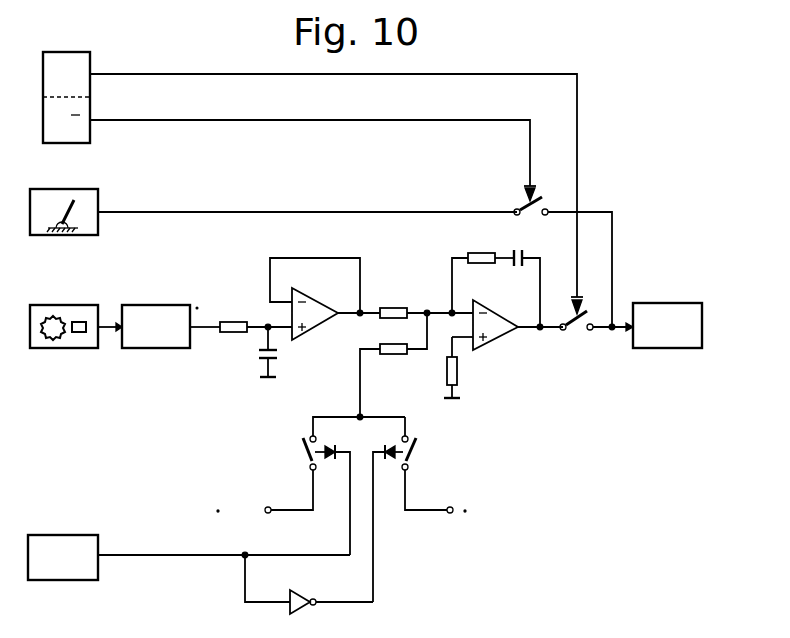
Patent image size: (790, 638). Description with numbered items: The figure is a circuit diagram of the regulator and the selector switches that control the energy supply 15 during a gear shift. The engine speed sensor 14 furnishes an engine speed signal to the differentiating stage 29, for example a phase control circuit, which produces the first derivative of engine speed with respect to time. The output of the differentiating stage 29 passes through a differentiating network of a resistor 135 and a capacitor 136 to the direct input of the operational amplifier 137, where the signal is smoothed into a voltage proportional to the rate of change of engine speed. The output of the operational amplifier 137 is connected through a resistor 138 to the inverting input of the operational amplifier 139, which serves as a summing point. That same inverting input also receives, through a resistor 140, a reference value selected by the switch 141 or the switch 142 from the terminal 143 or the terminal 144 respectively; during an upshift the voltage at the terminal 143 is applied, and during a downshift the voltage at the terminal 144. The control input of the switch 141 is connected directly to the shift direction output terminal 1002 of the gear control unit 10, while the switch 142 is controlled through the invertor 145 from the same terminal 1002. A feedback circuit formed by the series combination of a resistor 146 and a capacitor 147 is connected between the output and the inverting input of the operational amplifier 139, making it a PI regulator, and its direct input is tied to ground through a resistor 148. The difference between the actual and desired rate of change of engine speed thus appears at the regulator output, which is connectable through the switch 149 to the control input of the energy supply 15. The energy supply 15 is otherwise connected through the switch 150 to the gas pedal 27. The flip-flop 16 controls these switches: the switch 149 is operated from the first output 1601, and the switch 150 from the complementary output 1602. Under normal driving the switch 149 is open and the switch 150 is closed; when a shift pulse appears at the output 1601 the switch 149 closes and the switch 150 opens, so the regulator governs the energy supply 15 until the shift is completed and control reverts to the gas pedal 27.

The flip-flop 16 is at (66, 58).
The first output 1601 is at (92, 70).
The complementary output 1602 is at (92, 120).
The gas pedal 27 is at (63, 200).
The engine speed sensor 14 is at (66, 310).
The differentiating stage 29 is at (148, 310).
The resistor 135 is at (232, 324).
The capacitor 136 is at (262, 355).
The operational amplifier 137 is at (312, 328).
The resistor 138 is at (393, 310).
The resistor 140 is at (394, 352).
The operational amplifier 139 is at (508, 341).
The resistor 146 is at (482, 254).
The capacitor 147 is at (519, 252).
The resistor 148 is at (456, 371).
The switch 149 is at (577, 331).
The switch 150 is at (522, 205).
The energy supply 15 is at (668, 312).
The switch 141 is at (302, 451).
The switch 142 is at (418, 451).
The terminal 143 is at (266, 507).
The terminal 144 is at (452, 507).
The gear control unit 10 is at (65, 545).
The shift direction output terminal 1002 is at (100, 553).
The invertor 145 is at (300, 595).